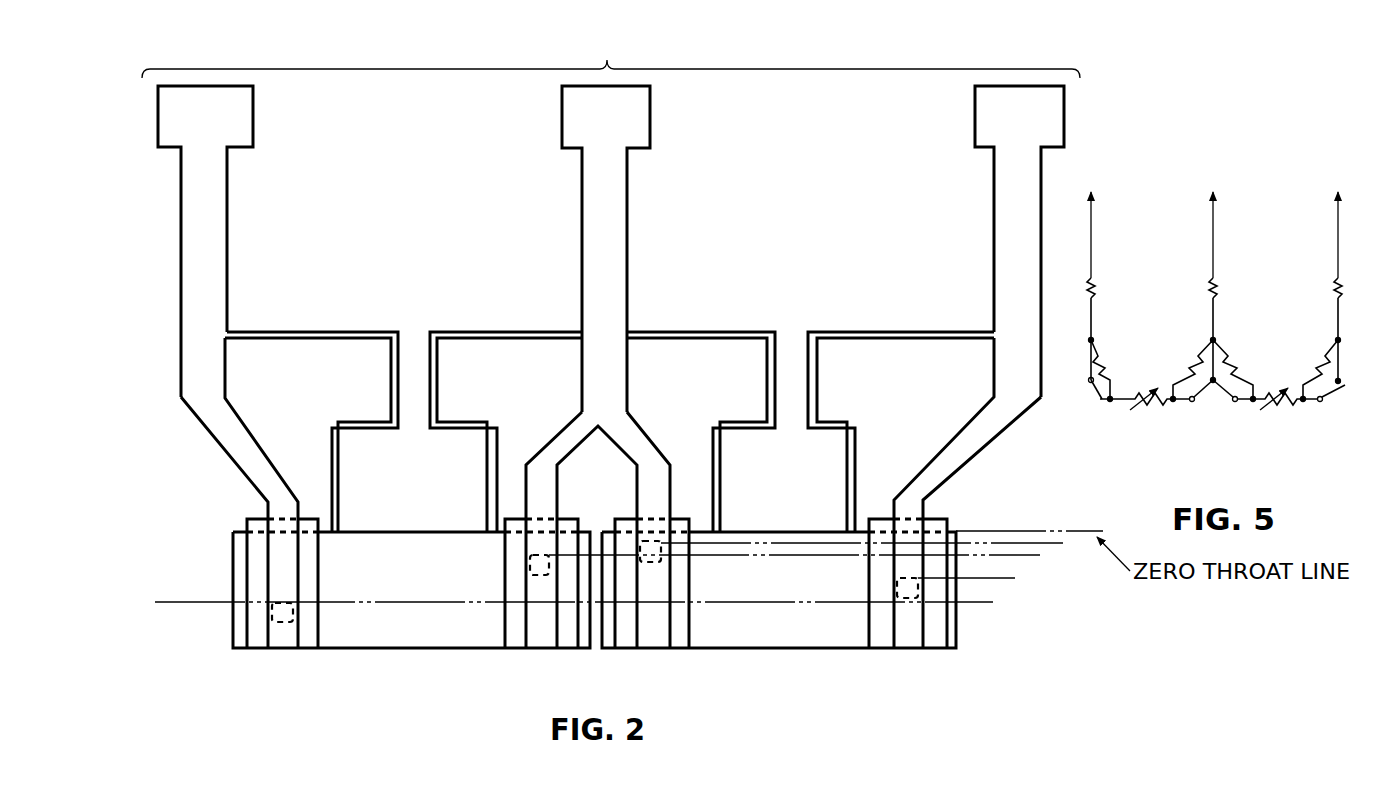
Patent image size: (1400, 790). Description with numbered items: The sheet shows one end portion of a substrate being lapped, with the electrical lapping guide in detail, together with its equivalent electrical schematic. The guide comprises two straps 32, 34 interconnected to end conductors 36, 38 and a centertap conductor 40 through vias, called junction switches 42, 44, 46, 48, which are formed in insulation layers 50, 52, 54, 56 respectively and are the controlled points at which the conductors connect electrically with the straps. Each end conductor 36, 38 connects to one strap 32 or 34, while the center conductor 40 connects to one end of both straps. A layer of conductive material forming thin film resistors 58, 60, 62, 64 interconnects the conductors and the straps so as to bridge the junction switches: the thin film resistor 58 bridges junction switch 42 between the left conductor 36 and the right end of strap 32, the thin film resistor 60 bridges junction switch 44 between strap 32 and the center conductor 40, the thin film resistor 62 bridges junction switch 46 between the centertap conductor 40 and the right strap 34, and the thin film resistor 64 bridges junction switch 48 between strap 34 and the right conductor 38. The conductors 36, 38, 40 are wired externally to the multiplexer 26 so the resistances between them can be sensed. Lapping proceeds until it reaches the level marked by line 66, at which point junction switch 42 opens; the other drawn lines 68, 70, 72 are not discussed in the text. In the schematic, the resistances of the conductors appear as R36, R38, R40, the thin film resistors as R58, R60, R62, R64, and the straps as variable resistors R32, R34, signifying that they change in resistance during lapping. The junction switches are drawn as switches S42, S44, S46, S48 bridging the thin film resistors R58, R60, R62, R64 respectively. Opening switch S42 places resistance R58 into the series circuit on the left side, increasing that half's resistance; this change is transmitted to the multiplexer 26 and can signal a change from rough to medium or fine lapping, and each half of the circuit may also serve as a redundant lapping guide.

In FIG. 2, the multiplexer 26 is at (611, 56).
In FIG. 5, the multiplexer 26 is at (1214, 220).
In FIG. 2, the end conductor 36 is at (220, 226).
In FIG. 2, the end conductor 38 is at (1012, 226).
In FIG. 2, the centertap conductor 40 is at (590, 226).
In FIG. 2, the thin film resistor 58 is at (313, 332).
In FIG. 2, the thin film resistor 60 is at (491, 332).
In FIG. 2, the thin film resistor 62 is at (689, 332).
In FIG. 2, the thin film resistor 64 is at (884, 332).
In FIG. 2, the strap 32 is at (425, 640).
In FIG. 2, the strap 34 is at (773, 640).
In FIG. 2, the insulation layer 50 is at (256, 567).
In FIG. 2, the insulation layer 52 is at (515, 640).
In FIG. 2, the insulation layer 54 is at (677, 640).
In FIG. 2, the insulation layer 56 is at (876, 640).
In FIG. 2, the junction switch 42 is at (293, 614).
In FIG. 2, the junction switch 44 is at (530, 568).
In FIG. 2, the junction switch 46 is at (661, 558).
In FIG. 2, the junction switch 48 is at (897, 589).
In FIG. 2, the line 66 is at (190, 606).
In FIG. 2, the gap alignment line 68 is at (1010, 584).
In FIG. 2, the gap alignment line 70 is at (1036, 561).
In FIG. 2, the gap alignment line 72 is at (1060, 549).
In FIG. 5, the conductor resistance R36 is at (1118, 287).
In FIG. 5, the conductor resistance R38 is at (1365, 287).
In FIG. 5, the conductor resistance R40 is at (1240, 287).
In FIG. 5, the thin film resistor resistance R58 is at (1113, 360).
In FIG. 5, the thin film resistor resistance R60 is at (1188, 360).
In FIG. 5, the thin film resistor resistance R62 is at (1239, 360).
In FIG. 5, the thin film resistor resistance R64 is at (1318, 360).
In FIG. 5, the variable resistor R32 is at (1157, 405).
In FIG. 5, the variable resistor R34 is at (1282, 405).
In FIG. 5, the switch S42 is at (1094, 402).
In FIG. 5, the switch S44 is at (1200, 402).
In FIG. 5, the switch S46 is at (1225, 402).
In FIG. 5, the switch S48 is at (1332, 402).